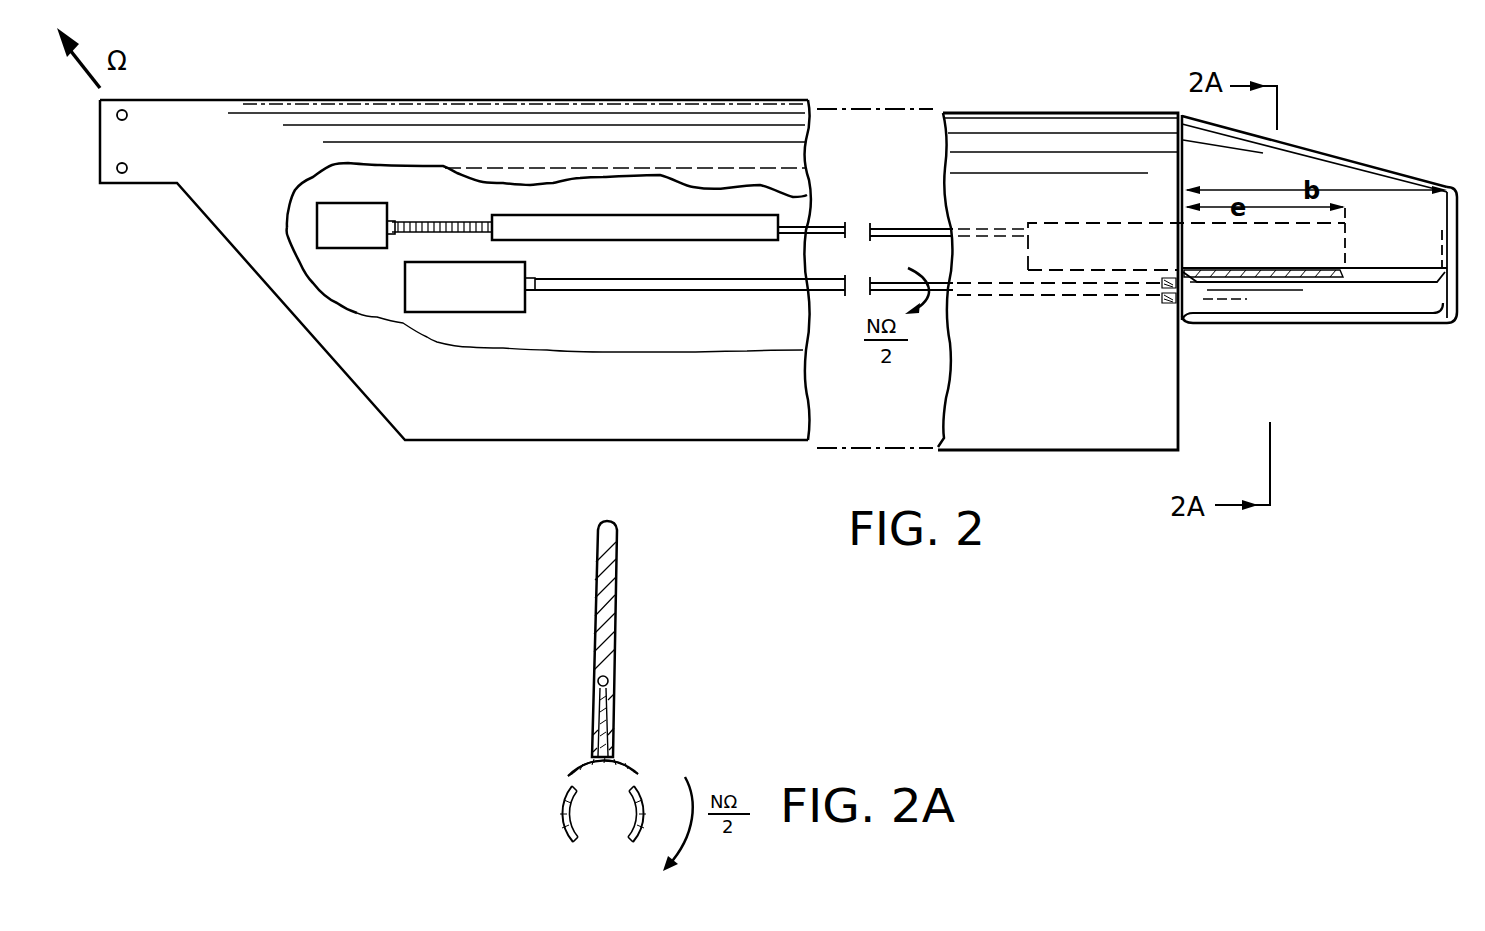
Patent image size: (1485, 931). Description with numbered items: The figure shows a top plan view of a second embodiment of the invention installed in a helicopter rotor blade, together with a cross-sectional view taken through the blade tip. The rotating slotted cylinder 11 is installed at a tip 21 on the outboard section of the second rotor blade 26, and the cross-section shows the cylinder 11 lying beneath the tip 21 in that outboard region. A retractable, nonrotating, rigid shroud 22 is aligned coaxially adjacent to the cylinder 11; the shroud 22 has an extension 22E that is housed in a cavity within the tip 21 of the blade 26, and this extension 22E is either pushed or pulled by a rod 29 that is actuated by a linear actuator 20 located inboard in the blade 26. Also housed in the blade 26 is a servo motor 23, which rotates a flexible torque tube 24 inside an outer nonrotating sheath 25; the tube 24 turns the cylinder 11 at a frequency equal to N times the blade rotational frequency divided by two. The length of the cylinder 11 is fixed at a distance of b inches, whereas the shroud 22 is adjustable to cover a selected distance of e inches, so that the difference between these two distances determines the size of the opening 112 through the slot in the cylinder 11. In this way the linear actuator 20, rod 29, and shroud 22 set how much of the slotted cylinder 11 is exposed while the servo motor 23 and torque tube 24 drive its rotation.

In FIG. 2, the rotating slotted cylinder 11 is at (1352, 315).
In FIG. 2A, the rotating slotted cylinder 11 is at (564, 801).
In FIG. 2, the opening 112 is at (1403, 282).
In FIG. 2, the linear actuator 20 is at (370, 203).
In FIG. 2, the tip 21 is at (1300, 168).
In FIG. 2A, the tip 21 is at (592, 602).
In FIG. 2, the retractable shroud 22 is at (1260, 278).
In FIG. 2A, the retractable shroud 22 is at (590, 770).
In FIG. 2A, the extension 22E is at (598, 717).
In FIG. 2, the servo motor 23 is at (427, 303).
In FIG. 2, the flexible torque tube 24 is at (993, 297).
In FIG. 2, the outer nonrotating sheath 25 is at (670, 293).
In FIG. 2, the second rotor blade 26 is at (1010, 108).
In FIG. 2, the rod 29 is at (455, 227).
In FIG. 2A, the rod 29 is at (598, 686).